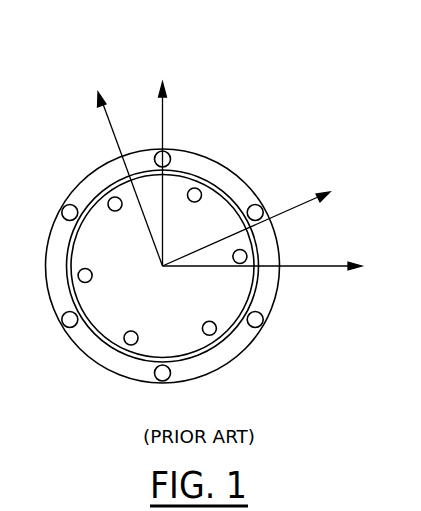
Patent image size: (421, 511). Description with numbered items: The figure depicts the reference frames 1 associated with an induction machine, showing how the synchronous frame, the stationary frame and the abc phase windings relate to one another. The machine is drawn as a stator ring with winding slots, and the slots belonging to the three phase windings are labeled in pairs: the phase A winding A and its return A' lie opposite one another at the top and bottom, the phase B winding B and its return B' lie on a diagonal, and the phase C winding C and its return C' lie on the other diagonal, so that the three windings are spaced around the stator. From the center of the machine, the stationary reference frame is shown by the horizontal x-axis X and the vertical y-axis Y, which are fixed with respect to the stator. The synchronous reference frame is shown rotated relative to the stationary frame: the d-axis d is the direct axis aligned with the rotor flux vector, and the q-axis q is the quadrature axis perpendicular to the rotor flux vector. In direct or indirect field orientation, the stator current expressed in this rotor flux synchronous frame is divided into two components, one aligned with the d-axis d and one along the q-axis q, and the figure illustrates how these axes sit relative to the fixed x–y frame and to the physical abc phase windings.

The reference frames 1 is at (208, 228).
The phase A winding A is at (155, 142).
The phase A return winding A' is at (162, 386).
The phase B winding B is at (55, 335).
The phase B return winding B' is at (266, 206).
The phase C winding C is at (266, 332).
The phase C return winding C' is at (57, 194).
The x-axis X is at (274, 268).
The y-axis Y is at (161, 158).
The d-axis d is at (260, 219).
The q-axis q is at (93, 100).